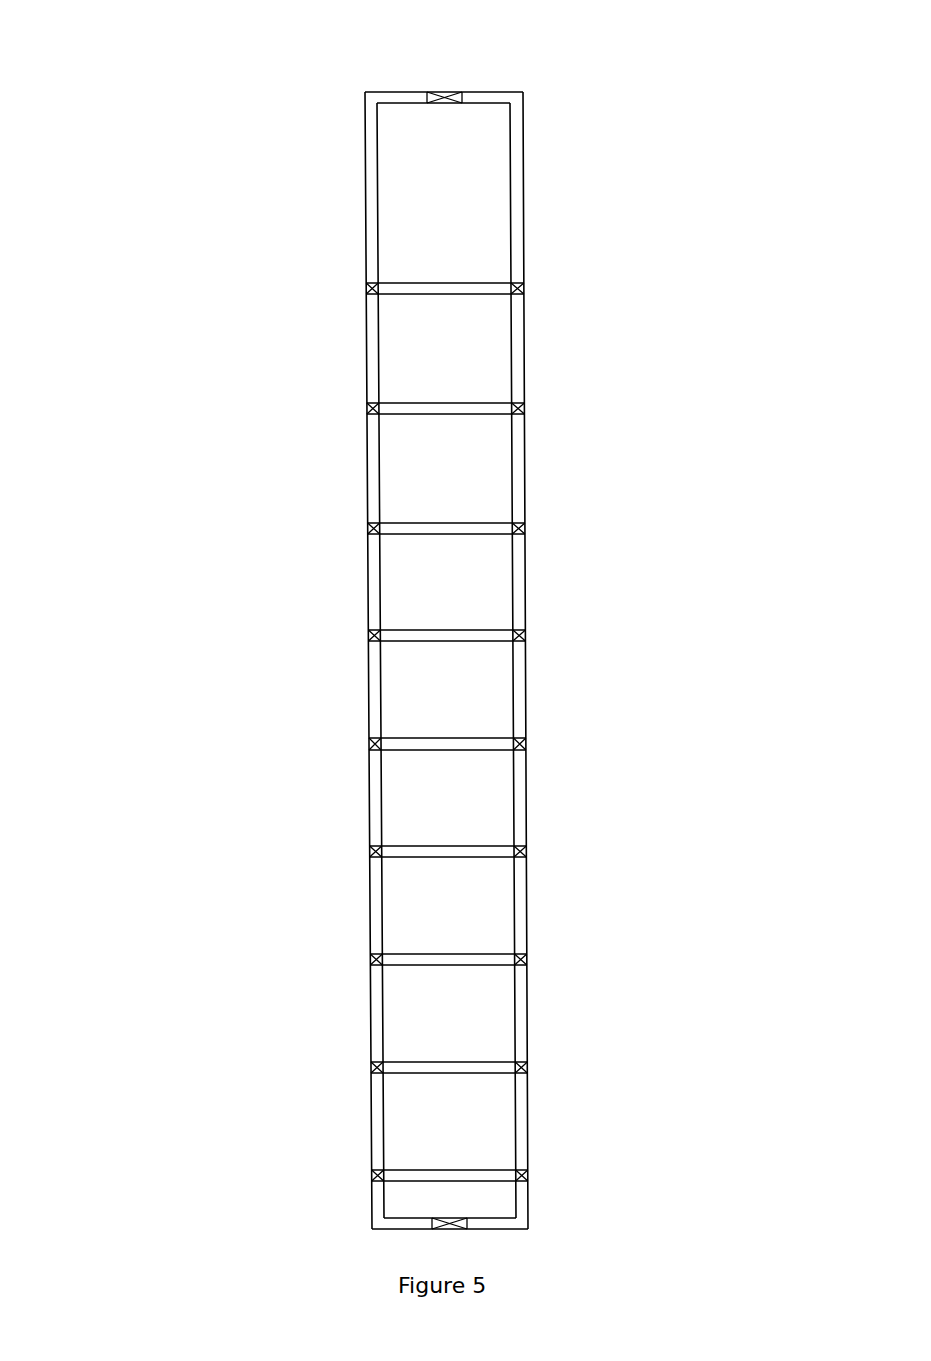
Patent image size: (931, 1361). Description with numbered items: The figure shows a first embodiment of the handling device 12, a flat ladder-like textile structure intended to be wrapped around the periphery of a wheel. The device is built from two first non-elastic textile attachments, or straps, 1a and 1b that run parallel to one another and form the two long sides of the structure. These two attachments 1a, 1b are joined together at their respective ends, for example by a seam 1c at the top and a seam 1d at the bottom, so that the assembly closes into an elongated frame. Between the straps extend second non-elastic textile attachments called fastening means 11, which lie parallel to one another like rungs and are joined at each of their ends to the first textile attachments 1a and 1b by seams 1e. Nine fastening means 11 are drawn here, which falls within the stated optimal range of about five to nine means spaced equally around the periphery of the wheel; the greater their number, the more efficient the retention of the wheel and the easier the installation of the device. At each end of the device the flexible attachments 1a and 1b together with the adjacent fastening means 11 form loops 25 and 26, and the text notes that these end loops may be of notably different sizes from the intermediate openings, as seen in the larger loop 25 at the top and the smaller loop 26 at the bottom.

The frame assembly 12 is at (163, 437).
The first non-elastic textile attachment 1a is at (517, 588).
The first non-elastic textile attachment 1b is at (375, 581).
The seam 1c is at (451, 91).
The seam 1d is at (460, 1228).
The seam 1e is at (366, 288).
The fastening means 11 is at (424, 291).
The loop 25 is at (400, 183).
The loop 26 is at (407, 1204).